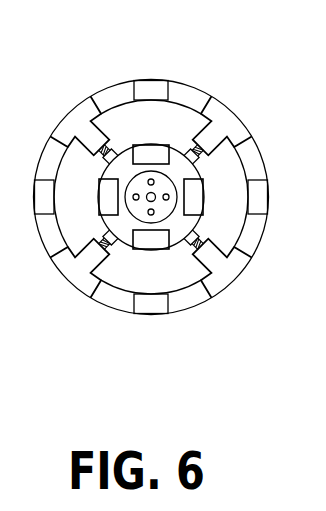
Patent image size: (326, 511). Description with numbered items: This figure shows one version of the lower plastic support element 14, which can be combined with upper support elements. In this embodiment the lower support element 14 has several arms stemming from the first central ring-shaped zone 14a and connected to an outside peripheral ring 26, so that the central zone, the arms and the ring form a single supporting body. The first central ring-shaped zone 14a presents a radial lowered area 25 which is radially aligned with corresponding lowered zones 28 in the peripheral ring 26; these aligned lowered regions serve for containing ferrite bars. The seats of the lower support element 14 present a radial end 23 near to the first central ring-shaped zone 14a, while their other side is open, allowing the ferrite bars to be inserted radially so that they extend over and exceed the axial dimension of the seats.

The lower support element 14 is at (203, 69).
The first central ring-shaped zone 14a is at (176, 220).
The radial end 23 is at (108, 203).
The radial lowered area 25 is at (192, 200).
The outside peripheral ring 26 is at (112, 97).
The lowered zones 28 is at (136, 91).